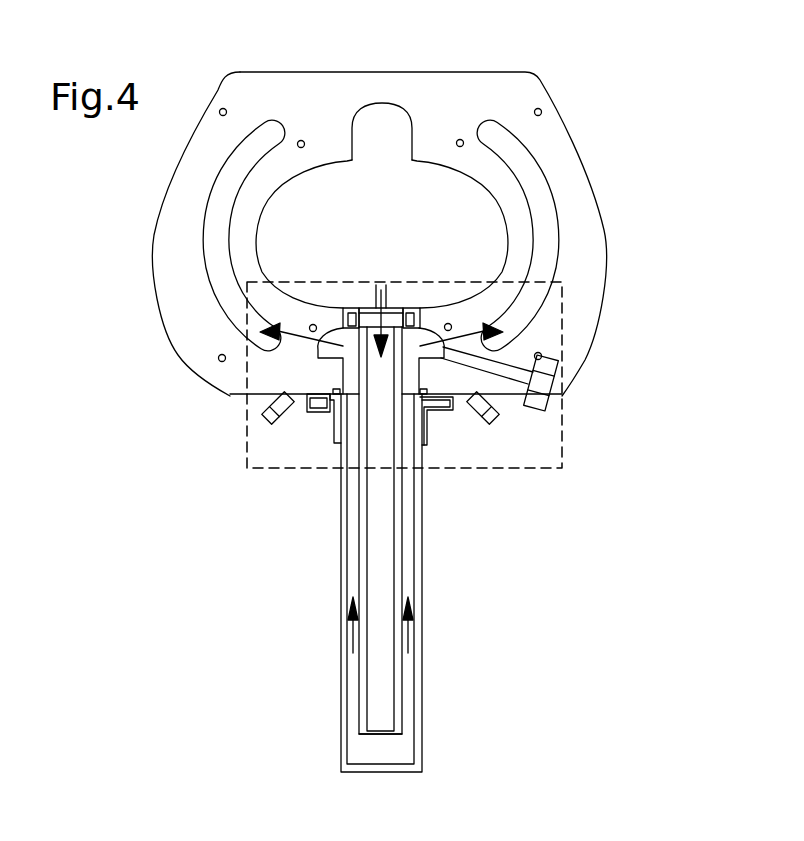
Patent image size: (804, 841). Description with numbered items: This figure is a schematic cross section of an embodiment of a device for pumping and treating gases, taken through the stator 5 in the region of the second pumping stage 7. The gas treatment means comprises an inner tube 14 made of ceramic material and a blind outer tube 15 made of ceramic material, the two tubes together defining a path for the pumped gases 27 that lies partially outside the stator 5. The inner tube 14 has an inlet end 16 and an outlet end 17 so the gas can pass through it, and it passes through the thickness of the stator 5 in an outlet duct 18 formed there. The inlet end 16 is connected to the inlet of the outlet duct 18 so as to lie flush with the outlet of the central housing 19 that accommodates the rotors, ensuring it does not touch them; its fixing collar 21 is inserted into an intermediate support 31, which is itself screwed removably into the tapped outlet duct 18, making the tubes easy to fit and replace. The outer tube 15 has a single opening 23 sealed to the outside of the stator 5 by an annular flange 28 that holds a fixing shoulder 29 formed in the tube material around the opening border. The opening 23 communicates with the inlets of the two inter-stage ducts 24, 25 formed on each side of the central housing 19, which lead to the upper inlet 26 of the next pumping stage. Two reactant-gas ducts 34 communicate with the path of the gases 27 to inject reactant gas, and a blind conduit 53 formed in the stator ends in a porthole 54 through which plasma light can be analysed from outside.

The stator 5 is at (593, 207).
The second pumping stage 7 is at (567, 143).
The inner tube 14 is at (383, 682).
The outer tube 15 is at (420, 572).
The inlet end 16 is at (402, 308).
The outlet end 17 is at (380, 735).
The outlet duct 18 is at (347, 371).
The central housing 19 is at (382, 234).
The fixing collar 21 is at (376, 287).
The opening 23 is at (428, 428).
The inter-stage duct 24 is at (212, 255).
The inter-stage duct 25 is at (548, 235).
The upper inlet 26 is at (387, 117).
The path for the pumped gases 27 is at (408, 528).
The annular flange 28 is at (313, 402).
The fixing shoulder 29 is at (330, 410).
The intermediate support 31 is at (352, 308).
The reactant-gas duct 34 is at (266, 421).
The blind conduit 53 is at (517, 364).
The porthole 54 is at (560, 378).